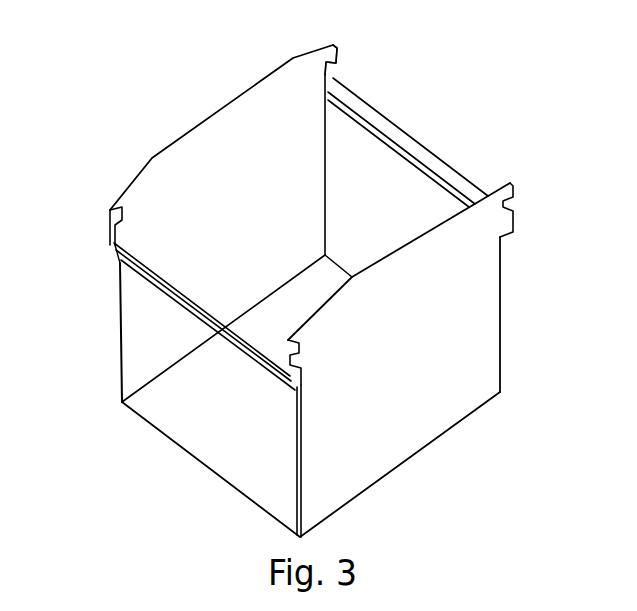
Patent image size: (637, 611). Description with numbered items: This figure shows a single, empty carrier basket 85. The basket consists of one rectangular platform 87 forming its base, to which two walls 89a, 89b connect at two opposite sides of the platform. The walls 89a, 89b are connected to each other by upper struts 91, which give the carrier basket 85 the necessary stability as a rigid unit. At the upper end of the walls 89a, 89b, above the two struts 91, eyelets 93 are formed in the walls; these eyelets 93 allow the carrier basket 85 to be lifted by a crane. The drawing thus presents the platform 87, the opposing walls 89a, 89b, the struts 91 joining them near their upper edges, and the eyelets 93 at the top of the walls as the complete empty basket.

The carrier basket 85 is at (223, 93).
The rectangular platform 87 is at (184, 456).
The wall 89a is at (502, 313).
The wall 89b is at (120, 317).
The upper strut 91 is at (400, 130).
The eyelet 93 is at (337, 62).